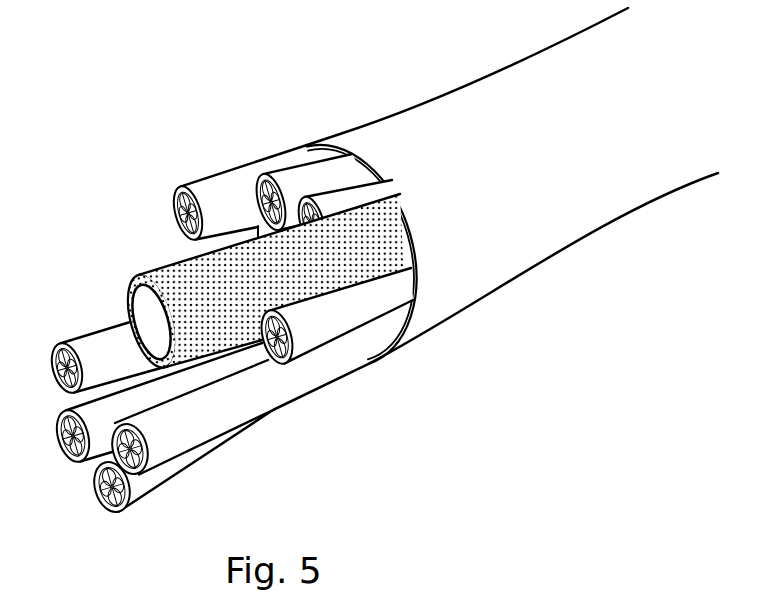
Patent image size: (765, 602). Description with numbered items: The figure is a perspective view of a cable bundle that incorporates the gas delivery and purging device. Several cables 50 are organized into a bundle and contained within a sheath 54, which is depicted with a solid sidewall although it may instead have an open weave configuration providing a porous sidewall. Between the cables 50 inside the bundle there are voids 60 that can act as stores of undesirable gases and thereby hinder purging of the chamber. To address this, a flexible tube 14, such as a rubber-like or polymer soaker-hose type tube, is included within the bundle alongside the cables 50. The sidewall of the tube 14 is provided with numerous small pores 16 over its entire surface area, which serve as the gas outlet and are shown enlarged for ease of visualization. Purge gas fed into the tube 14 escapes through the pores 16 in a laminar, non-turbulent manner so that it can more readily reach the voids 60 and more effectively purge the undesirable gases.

The flexible tube 14 is at (250, 320).
The pores 16 is at (171, 266).
The cables 50 is at (208, 189).
The sheath 54 is at (458, 114).
The voids 60 is at (251, 343).